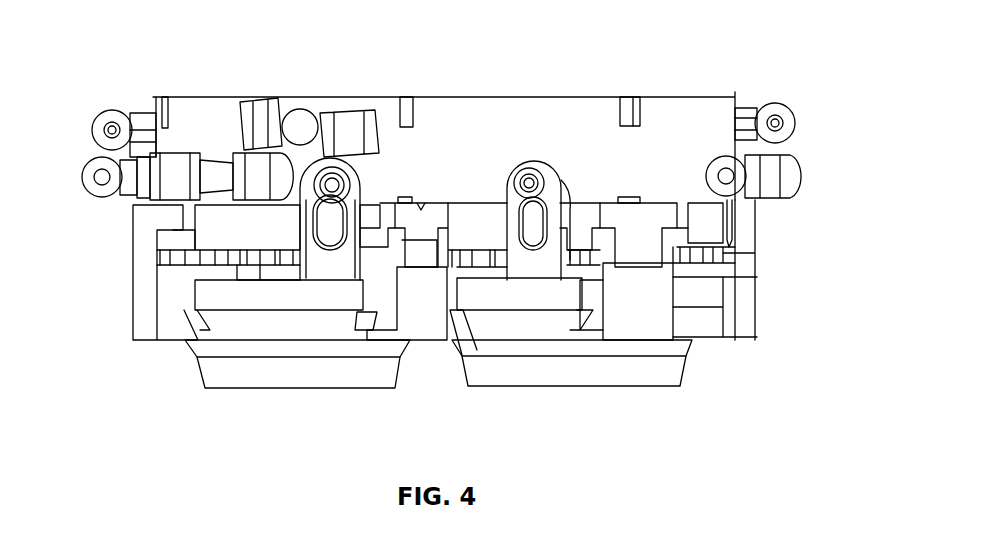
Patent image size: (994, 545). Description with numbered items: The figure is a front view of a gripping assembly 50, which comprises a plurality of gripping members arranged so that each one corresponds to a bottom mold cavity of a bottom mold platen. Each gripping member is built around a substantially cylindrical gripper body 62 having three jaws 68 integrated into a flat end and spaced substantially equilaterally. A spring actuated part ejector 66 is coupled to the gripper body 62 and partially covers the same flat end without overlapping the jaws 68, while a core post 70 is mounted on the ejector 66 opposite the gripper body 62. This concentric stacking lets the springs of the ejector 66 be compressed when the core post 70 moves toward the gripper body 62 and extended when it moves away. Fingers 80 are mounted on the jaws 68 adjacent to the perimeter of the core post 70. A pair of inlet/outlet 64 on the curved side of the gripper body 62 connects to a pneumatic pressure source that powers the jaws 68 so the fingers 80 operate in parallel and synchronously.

The gripping assembly 50 is at (130, 97).
The gripper body 62 is at (240, 218).
The inlet/outlet 64 is at (790, 190).
The part ejector 66 is at (190, 312).
The jaws 68 is at (635, 232).
The core post 70 is at (540, 328).
The fingers 80 is at (735, 308).